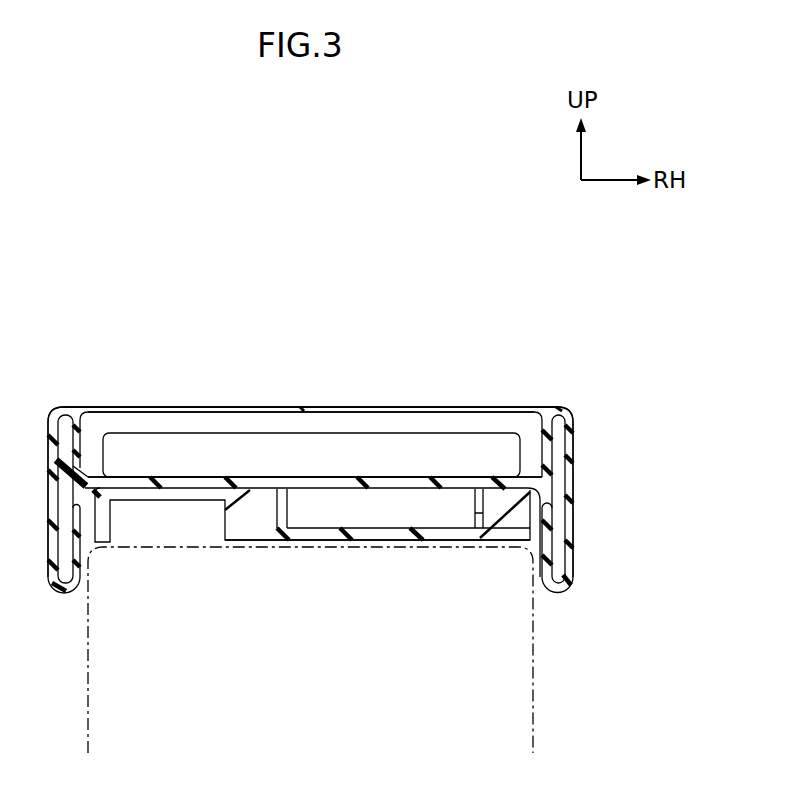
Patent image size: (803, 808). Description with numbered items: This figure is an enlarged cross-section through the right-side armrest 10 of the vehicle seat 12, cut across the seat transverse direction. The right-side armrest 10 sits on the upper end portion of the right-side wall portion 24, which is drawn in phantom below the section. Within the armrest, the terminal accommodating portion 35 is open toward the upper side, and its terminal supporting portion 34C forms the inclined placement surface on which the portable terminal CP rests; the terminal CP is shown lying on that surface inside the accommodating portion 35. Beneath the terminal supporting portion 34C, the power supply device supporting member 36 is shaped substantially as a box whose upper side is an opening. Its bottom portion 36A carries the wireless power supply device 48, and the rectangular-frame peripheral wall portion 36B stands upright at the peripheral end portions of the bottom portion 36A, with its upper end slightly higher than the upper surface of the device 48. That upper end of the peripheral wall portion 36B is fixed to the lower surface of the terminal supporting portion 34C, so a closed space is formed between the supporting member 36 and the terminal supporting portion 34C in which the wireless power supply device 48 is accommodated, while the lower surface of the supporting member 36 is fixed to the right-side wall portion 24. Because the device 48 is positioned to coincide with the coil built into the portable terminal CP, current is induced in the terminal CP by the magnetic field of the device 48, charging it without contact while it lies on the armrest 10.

The right-side armrest 10 is at (103, 263).
The vehicle seat 12 is at (310, 492).
The terminal accommodating portion 35 is at (165, 419).
The portable terminal CP is at (253, 432).
The terminal supporting portion 34C is at (333, 477).
The power supply device supporting member 36 is at (303, 542).
The bottom portion 36A is at (397, 527).
The peripheral wall portion 36B is at (473, 512).
The wireless power supply device 48 is at (442, 534).
The right-side wall portion 24 is at (533, 686).